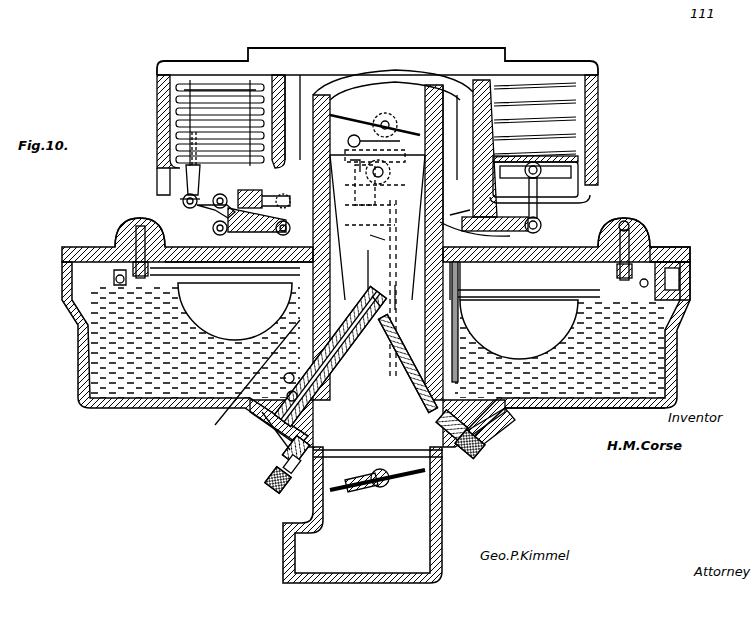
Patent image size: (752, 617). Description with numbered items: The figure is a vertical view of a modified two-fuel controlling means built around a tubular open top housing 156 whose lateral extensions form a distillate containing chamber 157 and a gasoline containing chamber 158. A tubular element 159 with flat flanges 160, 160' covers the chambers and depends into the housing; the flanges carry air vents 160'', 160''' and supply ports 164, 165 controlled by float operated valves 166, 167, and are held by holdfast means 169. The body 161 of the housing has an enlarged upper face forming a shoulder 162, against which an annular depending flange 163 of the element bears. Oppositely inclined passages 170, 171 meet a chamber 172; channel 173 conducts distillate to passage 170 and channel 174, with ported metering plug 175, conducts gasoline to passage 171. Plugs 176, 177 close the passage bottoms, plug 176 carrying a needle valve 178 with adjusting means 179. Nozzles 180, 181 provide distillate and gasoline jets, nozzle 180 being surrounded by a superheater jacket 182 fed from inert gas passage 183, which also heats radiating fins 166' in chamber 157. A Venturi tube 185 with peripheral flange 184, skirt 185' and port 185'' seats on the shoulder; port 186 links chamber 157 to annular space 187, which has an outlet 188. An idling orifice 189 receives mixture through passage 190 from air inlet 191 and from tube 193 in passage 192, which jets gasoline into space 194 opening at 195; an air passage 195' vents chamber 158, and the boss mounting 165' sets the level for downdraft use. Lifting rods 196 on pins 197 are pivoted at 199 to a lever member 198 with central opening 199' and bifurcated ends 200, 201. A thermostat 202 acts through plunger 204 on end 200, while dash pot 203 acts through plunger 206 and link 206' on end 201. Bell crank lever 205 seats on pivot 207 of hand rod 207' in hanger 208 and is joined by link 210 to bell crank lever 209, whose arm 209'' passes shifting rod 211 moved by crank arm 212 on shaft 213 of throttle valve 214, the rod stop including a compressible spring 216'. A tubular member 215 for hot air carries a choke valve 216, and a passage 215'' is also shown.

The tubular open top housing 156 is at (686, 356).
The distillate containing chamber 157 is at (115, 410).
The gasoline containing chamber 158 is at (590, 408).
The tubular element 159 is at (443, 170).
The flat flange 160 is at (187, 230).
The flat flange 160' is at (575, 230).
The air vent 160'' is at (202, 289).
The air vent 160''' is at (566, 252).
The body of housing 161 is at (280, 340).
The shoulder 162 is at (470, 290).
The annular depending flange 163 is at (300, 266).
The supply port 164 is at (125, 232).
The supply port 165 is at (638, 209).
The extended boss assembly mounting 165' is at (652, 242).
The float operated controlling valve 166 is at (105, 254).
The radiating fins 166' is at (235, 311).
The float operated controlling valve 167 is at (690, 273).
The holdfast means 169 is at (675, 252).
The inclined passage 170 is at (318, 412).
The inclined passage 171 is at (440, 418).
The chamber 172 is at (355, 375).
The channel 173 is at (285, 450).
The channel 174 is at (478, 436).
The ported metering plug 175 is at (495, 412).
The removable plug 176 is at (296, 465).
The removable plug 177 is at (468, 452).
The needle valve 178 is at (320, 430).
The adjusting means 179 is at (272, 478).
The nozzle 180 is at (372, 255).
The nozzle 181 is at (396, 300).
The superheater jacket 182 is at (315, 360).
The inert gas conducting passage 183 is at (280, 425).
The peripheral flange 184 is at (300, 395).
The Venturi tube 185 is at (308, 239).
The skirt 185' is at (482, 322).
The port 185'' is at (407, 363).
The port 186 is at (300, 276).
The annular space 187 is at (282, 319).
The outlet 188 is at (345, 230).
The idling orifice 189 is at (442, 130).
The passage 190 is at (443, 185).
The air inlet 191 is at (443, 230).
The passage 192 is at (505, 310).
The tube 193 is at (505, 292).
The space 194 is at (475, 235).
The opening 195 is at (495, 213).
The air passage 195' is at (479, 281).
The lifting rods 196 is at (372, 240).
The pins 197 is at (375, 320).
The lever member 198 is at (248, 190).
The pivot 199 is at (375, 187).
The central opening 199' is at (461, 189).
The bifurcated end 200 is at (232, 180).
The bifurcated end 201 is at (540, 222).
The thermostat 202 is at (205, 115).
The dash pot 203 is at (520, 95).
The plunger 204 is at (220, 175).
The bell crank lever 205 is at (205, 212).
The plunger 206 is at (577, 140).
The link 206' is at (564, 171).
The pivot 207 is at (159, 186).
The hand operated rod 207' is at (206, 135).
The hanger 208 is at (190, 135).
The bell crank lever 209 is at (265, 194).
The arm 209'' is at (289, 171).
The link 210 is at (220, 236).
The shifting rod 211 is at (296, 117).
The crank arm 212 is at (358, 125).
The stem or shaft 213 is at (385, 113).
The throttle valve 214 is at (395, 135).
The tubular member 215 is at (382, 515).
The passage 215'' is at (400, 290).
The choke valve 216 is at (377, 506).
The compressible spring 216' is at (398, 177).